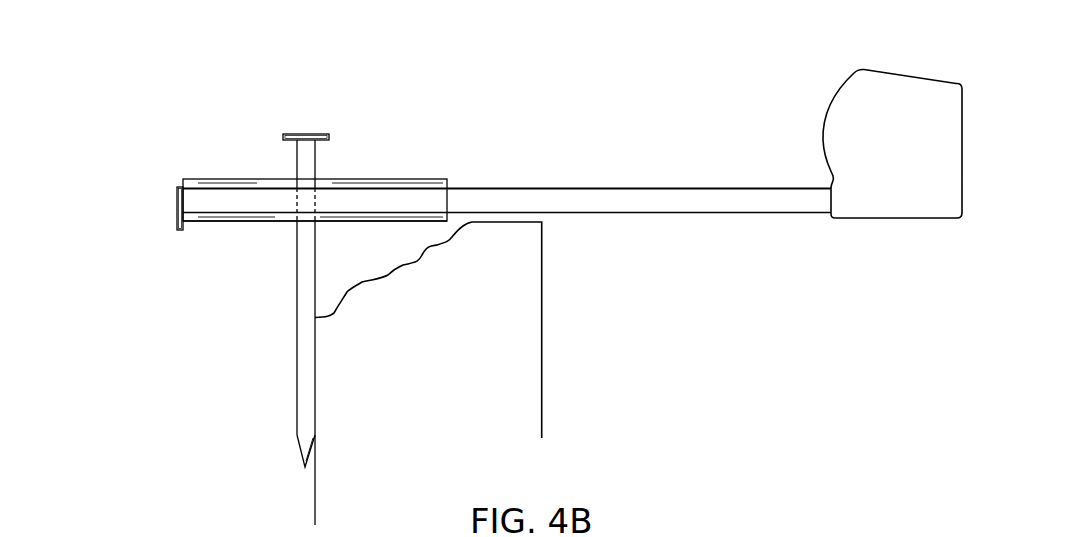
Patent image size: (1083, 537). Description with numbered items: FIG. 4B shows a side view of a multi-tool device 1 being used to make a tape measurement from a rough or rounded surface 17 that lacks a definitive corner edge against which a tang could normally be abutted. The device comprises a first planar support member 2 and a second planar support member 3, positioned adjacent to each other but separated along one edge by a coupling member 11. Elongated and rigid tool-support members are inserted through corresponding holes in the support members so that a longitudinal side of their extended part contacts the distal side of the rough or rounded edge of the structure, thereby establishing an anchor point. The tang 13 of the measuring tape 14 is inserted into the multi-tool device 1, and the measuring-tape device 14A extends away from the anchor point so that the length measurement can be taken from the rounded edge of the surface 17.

The multi-tool device 1 is at (190, 166).
The first planar support member 2 is at (420, 180).
The second planar support member 3 is at (213, 222).
The coupling member 11 is at (435, 197).
The tang 13 is at (178, 188).
The measuring tape 14 is at (688, 198).
The measuring-tape device 14A is at (898, 88).
The rough or rounded surface 17 is at (513, 345).